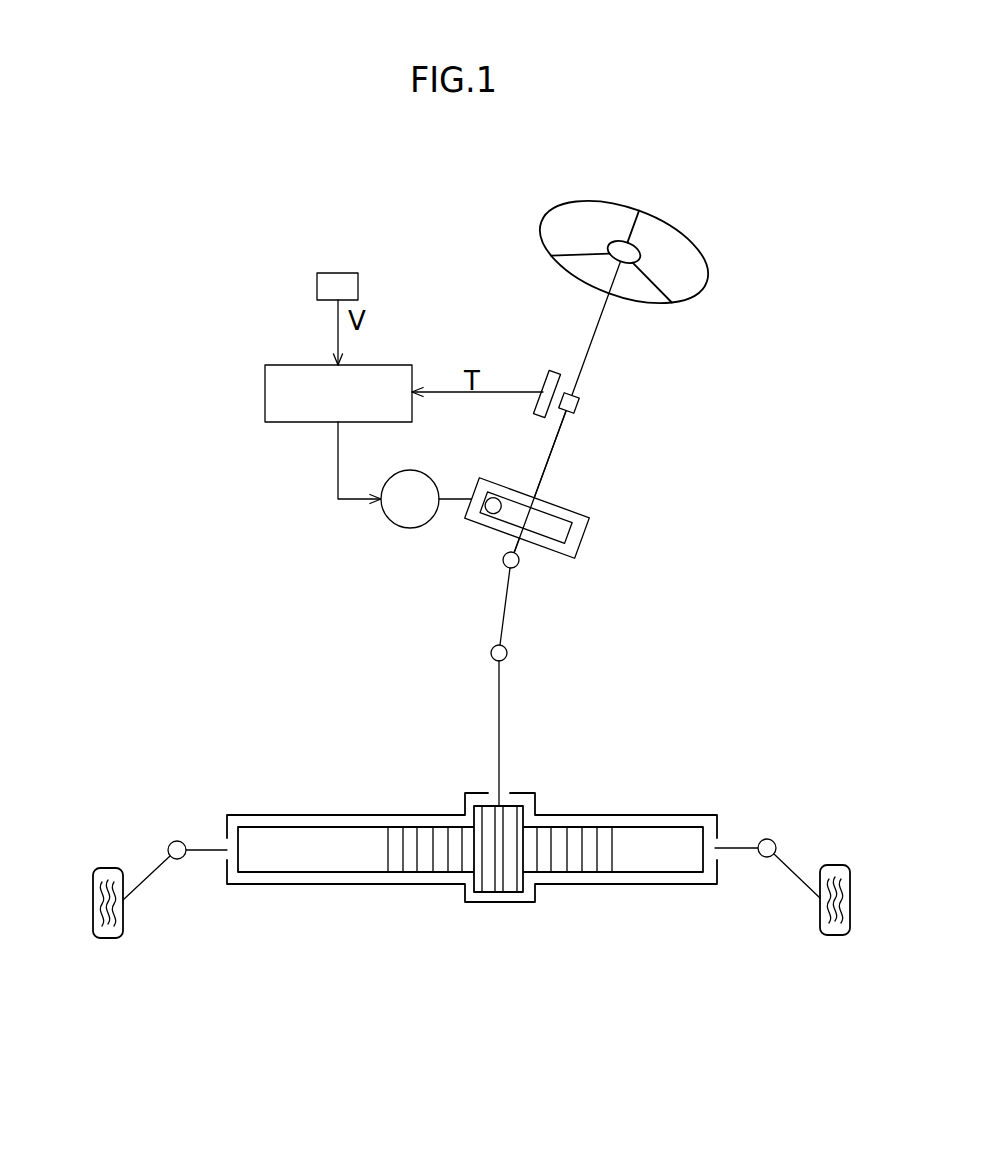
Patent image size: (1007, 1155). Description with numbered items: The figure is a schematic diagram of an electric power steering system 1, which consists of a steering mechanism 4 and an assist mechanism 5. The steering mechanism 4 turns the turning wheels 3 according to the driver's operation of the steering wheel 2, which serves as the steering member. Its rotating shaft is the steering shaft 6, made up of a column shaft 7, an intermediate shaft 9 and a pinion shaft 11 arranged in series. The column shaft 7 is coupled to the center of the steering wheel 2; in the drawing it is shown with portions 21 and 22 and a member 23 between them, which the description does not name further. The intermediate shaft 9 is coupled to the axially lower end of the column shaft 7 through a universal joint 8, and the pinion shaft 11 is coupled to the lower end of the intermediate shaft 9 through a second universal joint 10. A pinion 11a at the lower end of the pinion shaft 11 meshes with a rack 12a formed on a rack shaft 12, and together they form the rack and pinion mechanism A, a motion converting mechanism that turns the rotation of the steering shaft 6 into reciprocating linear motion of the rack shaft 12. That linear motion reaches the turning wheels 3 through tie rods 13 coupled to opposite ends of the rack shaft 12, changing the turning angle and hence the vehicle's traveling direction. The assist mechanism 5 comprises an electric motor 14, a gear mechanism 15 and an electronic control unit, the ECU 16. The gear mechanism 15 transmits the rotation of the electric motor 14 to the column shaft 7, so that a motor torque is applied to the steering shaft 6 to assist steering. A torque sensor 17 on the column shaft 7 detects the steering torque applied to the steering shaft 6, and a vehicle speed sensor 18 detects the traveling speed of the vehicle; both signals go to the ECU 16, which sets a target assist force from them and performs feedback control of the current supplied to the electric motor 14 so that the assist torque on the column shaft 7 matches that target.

The electric power steering system 1 is at (651, 227).
The steering wheel 2 is at (615, 206).
The turning wheels 3 is at (108, 940).
The steering mechanism 4 is at (707, 248).
The assist mechanism 5 is at (464, 505).
The steering shaft 6 is at (605, 408).
The column shaft 7 is at (660, 370).
The universal joint 8 is at (518, 560).
The intermediate shaft 9 is at (507, 608).
The universal joint 10 is at (508, 653).
The pinion shaft 11 is at (502, 755).
The pinion 11a is at (490, 885).
The rack shaft 12 is at (470, 886).
The rack 12a is at (442, 868).
The tie rods 13 is at (152, 877).
The electric motor 14 is at (412, 520).
The gear mechanism 15 is at (587, 530).
The electronic control unit (ECU) 16 is at (290, 365).
The torque sensor 17 is at (550, 373).
The vehicle speed sensor 18 is at (338, 272).
The input shaft 21 is at (582, 370).
The output shaft 22 is at (552, 455).
The torsion bar 23 is at (580, 405).
The rack and pinion mechanism A is at (525, 908).